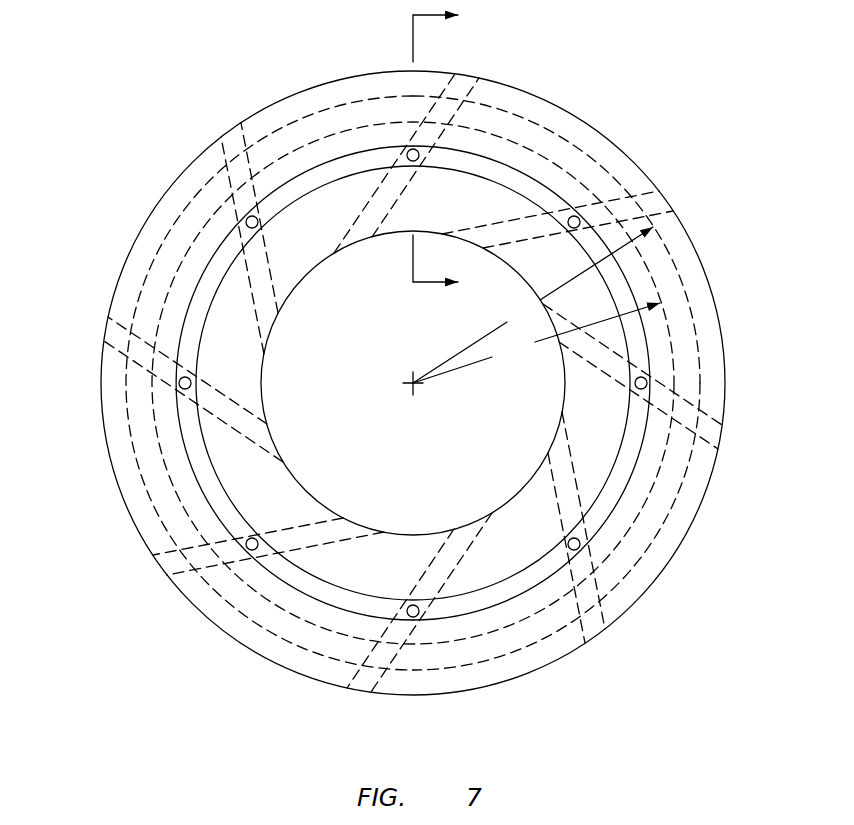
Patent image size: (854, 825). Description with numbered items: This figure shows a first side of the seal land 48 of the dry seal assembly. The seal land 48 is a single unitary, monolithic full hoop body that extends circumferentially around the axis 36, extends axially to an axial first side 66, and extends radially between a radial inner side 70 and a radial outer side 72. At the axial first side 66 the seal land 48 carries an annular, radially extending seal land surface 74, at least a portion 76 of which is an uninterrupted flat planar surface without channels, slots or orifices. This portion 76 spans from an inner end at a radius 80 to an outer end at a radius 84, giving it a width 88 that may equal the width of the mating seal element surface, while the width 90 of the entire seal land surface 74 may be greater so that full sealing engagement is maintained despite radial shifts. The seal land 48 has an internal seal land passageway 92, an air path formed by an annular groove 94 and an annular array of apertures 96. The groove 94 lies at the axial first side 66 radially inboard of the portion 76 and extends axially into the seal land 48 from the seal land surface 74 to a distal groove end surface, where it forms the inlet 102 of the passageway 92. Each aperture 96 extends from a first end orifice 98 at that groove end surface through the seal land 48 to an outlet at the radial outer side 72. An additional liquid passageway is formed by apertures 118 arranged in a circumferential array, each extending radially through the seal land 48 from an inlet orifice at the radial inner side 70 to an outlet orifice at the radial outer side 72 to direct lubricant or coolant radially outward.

The axis 36 is at (417, 385).
The seal land 48 is at (700, 140).
The axial first side 66 is at (641, 568).
The radial inner side 70 is at (263, 363).
The radial outer side 72 is at (102, 382).
The seal land surface 74 is at (667, 542).
The portion of the seal land surface 76 is at (162, 522).
The radius of an inner end of the portion of the seal land surface 80 is at (536, 343).
The radius of an outer end of the portion of the seal land surface 84 is at (533, 305).
The width of the portion of the seal land surface 88 is at (510, 197).
The width of the entire seal land surface 90 is at (360, 235).
The seal land passageway 92 is at (340, 603).
The groove 94 is at (520, 590).
The apertures 96 is at (252, 551).
The first end orifice 98 is at (479, 418).
The inlet 102 is at (640, 473).
The apertures 118 is at (707, 413).